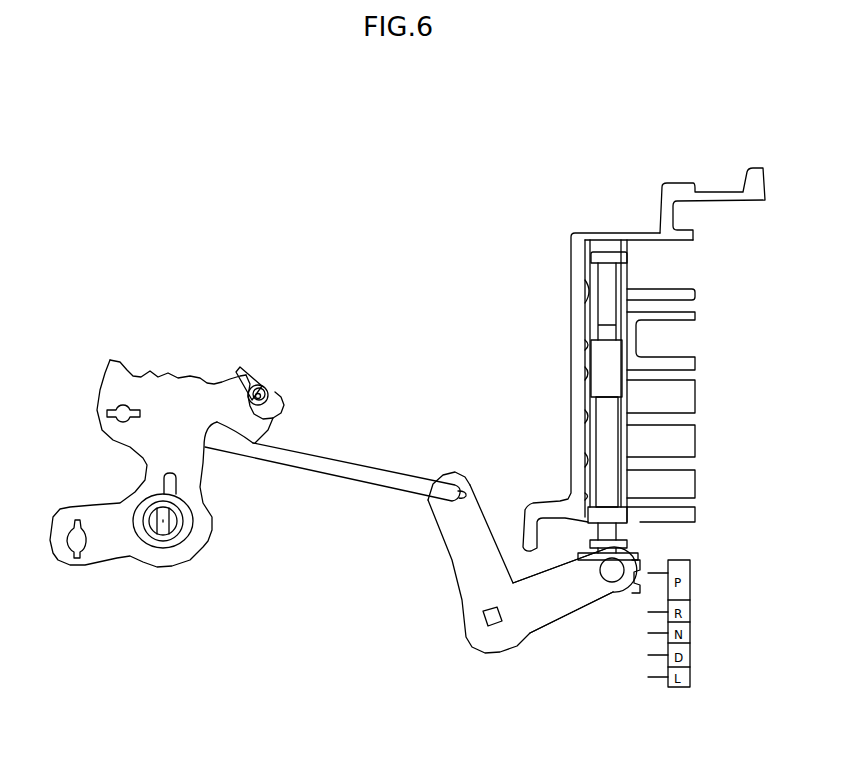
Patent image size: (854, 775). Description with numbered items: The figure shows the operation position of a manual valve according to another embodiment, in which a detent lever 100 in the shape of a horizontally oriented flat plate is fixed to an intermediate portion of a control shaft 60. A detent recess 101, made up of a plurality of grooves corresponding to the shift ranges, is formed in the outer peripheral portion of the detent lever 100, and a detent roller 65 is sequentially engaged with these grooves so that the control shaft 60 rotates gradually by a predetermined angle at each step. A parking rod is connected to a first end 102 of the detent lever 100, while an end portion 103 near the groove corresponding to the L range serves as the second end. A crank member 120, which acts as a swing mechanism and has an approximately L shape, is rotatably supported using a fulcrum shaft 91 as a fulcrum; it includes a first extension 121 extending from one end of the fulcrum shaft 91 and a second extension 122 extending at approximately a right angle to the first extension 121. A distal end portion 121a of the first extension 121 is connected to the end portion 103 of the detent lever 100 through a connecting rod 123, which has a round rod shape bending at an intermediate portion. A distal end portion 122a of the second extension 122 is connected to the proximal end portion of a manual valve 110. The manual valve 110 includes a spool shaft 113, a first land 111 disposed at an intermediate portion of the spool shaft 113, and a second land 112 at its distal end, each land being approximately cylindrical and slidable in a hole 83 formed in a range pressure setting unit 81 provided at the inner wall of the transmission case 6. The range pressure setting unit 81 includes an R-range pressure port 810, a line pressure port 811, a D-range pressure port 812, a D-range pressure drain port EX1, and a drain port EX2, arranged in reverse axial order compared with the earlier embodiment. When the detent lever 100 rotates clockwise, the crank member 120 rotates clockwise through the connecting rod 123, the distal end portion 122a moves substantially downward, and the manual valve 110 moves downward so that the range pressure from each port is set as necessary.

The transmission case 6 is at (722, 192).
The control shaft 60 is at (168, 530).
The detent roller 65 is at (269, 393).
The range pressure setting unit 81 is at (690, 283).
The hole 83 is at (595, 290).
The fulcrum shaft 91 is at (493, 627).
The detent lever 100 is at (192, 465).
The detent recess 101 is at (213, 383).
The first end 102 is at (83, 555).
The end portion 103 is at (120, 407).
The manual valve 110 is at (593, 407).
The first land 111 is at (597, 358).
The second land 112 is at (620, 258).
The spool shaft 113 is at (604, 452).
The crank member 120 is at (523, 668).
The first extension 121 is at (460, 568).
The distal end portion 121a is at (458, 477).
The second extension 122 is at (565, 608).
The distal end portion 122a is at (620, 593).
The connecting rod 123 is at (347, 464).
The R-range pressure port 810 is at (697, 299).
The line pressure port 811 is at (688, 370).
The D-range pressure port 812 is at (688, 416).
The D-range pressure drain port EX1 is at (688, 456).
The drain port EX2 is at (690, 498).